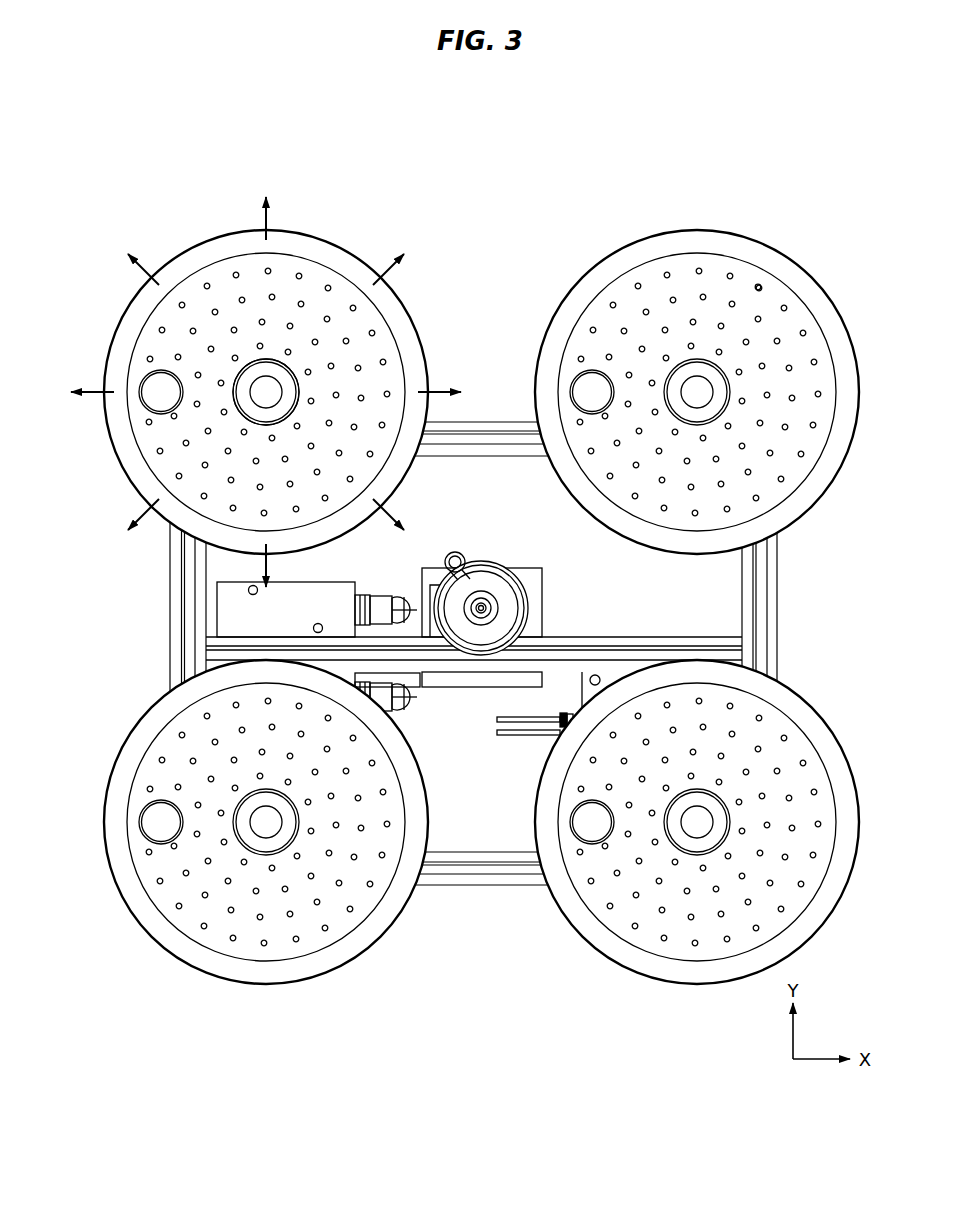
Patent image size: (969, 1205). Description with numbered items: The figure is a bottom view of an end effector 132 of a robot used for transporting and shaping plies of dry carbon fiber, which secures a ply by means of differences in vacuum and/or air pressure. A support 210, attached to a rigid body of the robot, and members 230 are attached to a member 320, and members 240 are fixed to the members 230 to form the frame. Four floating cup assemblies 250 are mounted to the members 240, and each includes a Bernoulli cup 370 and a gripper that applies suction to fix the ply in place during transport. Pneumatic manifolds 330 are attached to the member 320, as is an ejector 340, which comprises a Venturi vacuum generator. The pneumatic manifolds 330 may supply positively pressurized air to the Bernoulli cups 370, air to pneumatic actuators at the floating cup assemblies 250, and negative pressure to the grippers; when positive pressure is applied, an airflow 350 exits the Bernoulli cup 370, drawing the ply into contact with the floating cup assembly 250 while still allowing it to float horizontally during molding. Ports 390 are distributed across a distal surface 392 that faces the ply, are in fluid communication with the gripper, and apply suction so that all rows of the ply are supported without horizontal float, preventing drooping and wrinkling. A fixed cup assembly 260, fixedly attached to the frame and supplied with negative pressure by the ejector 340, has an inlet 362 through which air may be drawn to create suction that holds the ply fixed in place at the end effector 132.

The end effector 132 is at (90, 626).
The support 210 is at (168, 142).
The members 230 is at (778, 577).
The members 240 is at (485, 422).
The floating cup assemblies 250 is at (632, 236).
The fixed cup assembly 260 is at (498, 556).
The member 320 is at (688, 637).
The pneumatic manifolds 330 is at (350, 582).
The ejector 340 is at (515, 737).
The airflow 350 is at (266, 222).
The inlet 362 is at (485, 608).
The Bernoulli cup 370 is at (250, 395).
The ports 390 is at (758, 285).
The distal surface 392 is at (716, 273).